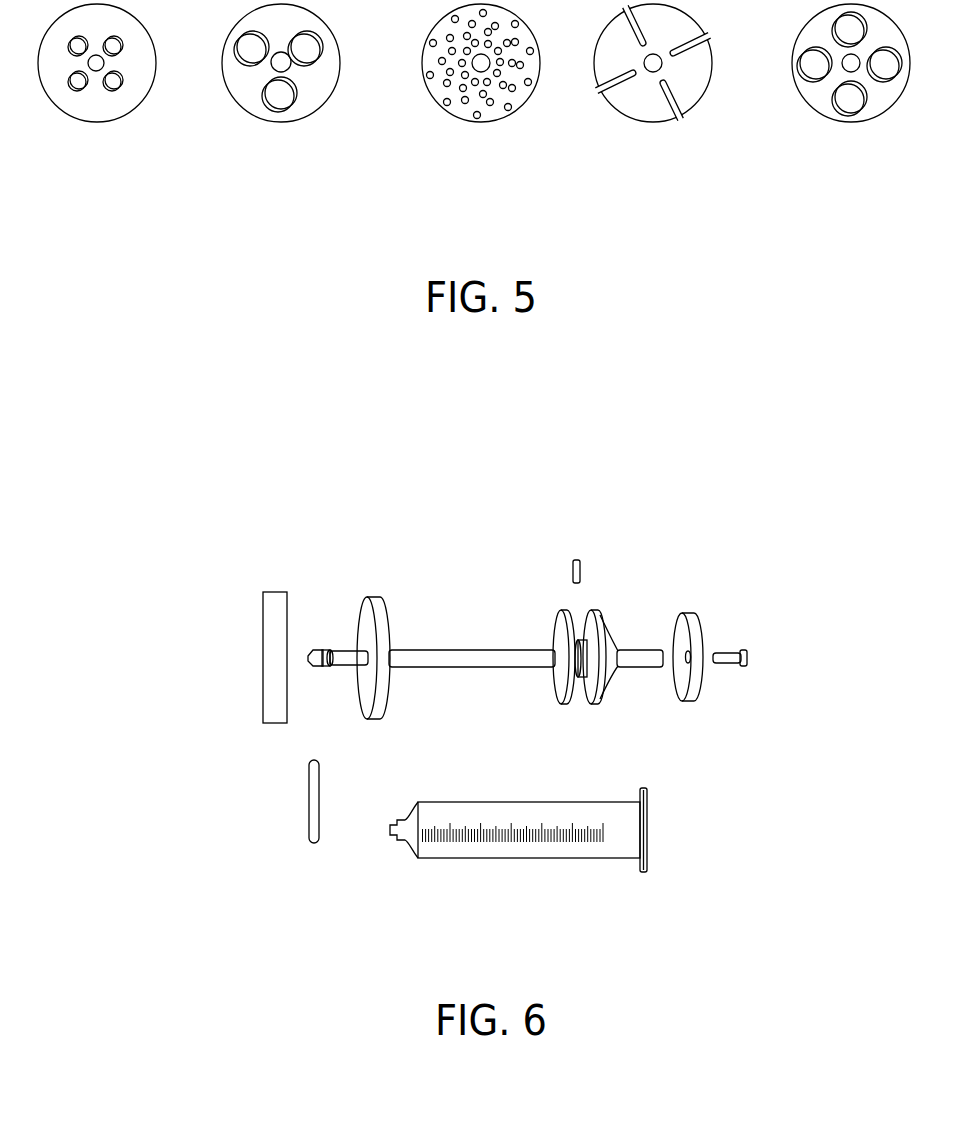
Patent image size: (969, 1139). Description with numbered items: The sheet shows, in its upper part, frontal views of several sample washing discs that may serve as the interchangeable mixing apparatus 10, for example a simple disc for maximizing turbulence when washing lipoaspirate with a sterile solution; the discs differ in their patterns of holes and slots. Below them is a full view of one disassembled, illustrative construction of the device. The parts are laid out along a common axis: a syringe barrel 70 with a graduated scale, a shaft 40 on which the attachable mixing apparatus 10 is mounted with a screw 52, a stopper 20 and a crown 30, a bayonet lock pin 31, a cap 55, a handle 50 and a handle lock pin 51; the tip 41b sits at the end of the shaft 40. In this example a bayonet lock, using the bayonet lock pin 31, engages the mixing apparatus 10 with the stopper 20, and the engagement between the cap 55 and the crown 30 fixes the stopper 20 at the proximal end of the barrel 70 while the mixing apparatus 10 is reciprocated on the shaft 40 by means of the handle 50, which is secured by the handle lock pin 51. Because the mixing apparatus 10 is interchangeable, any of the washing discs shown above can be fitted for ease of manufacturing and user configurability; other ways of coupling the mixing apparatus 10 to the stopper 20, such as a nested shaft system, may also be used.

The mixing apparatus 10 is at (687, 613).
The stopper 20 is at (597, 697).
The crown 30 is at (555, 697).
The bayonet lock pin 31 is at (575, 558).
The shaft 40 is at (472, 648).
The shaft tip 41b is at (313, 667).
The handle 50 is at (273, 592).
The handle lock pin 51 is at (309, 810).
The screw 52 is at (740, 667).
The cap 55 is at (370, 598).
The syringe barrel 70 is at (532, 858).